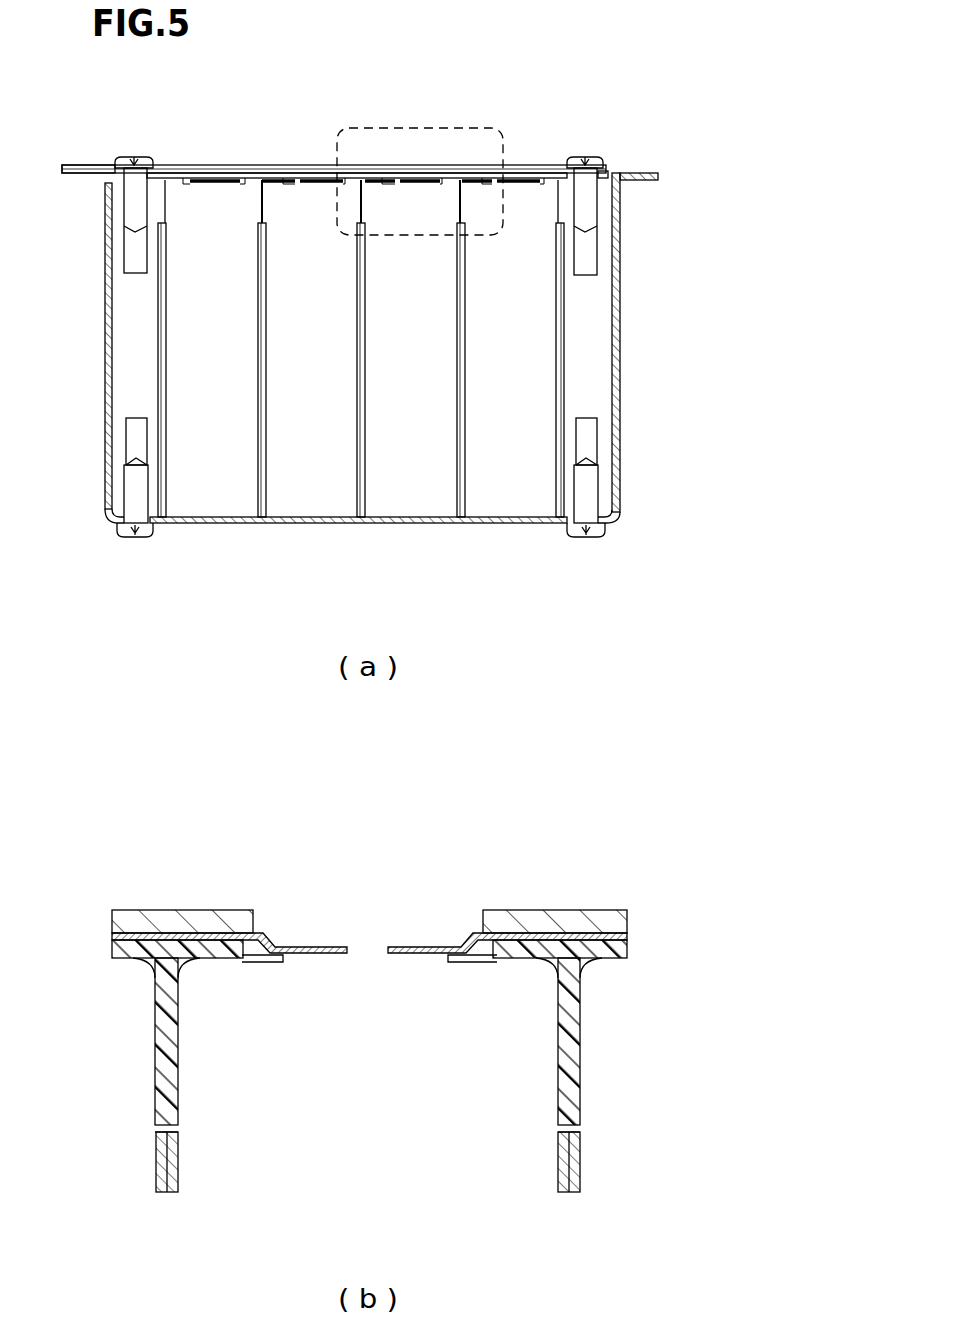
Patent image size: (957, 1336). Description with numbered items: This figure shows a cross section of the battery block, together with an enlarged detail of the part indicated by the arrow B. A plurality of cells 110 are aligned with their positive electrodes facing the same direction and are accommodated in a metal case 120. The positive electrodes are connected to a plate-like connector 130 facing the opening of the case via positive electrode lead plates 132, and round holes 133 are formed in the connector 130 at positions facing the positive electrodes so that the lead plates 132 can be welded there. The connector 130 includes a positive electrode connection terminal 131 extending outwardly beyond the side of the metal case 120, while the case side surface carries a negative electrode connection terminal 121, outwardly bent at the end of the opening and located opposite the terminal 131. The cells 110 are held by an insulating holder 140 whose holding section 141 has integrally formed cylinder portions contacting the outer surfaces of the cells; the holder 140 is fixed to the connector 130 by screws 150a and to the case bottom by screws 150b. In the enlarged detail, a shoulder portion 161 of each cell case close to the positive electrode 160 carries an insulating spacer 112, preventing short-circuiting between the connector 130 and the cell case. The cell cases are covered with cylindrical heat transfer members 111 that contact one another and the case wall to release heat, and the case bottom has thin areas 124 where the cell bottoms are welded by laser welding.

The cell 110 is at (290, 225).
The heat transfer member 111 is at (476, 340).
The insulating spacer 112 is at (217, 933).
The metal case 120 is at (623, 447).
The negative electrode connection terminal 121 is at (636, 186).
The area of small thickness 124 is at (308, 524).
The connector 130 is at (317, 165).
The positive electrode connection terminal 131 is at (78, 165).
The positive electrode lead plate 132 is at (295, 945).
The round hole 133 is at (356, 915).
The insulating holder 140 is at (595, 297).
The holding section 141 is at (163, 1043).
The screw 150a is at (595, 157).
The screw 150b is at (598, 538).
The positive electrode 160 is at (370, 947).
The shoulder portion 161 is at (190, 964).
The arrow B is at (433, 127).